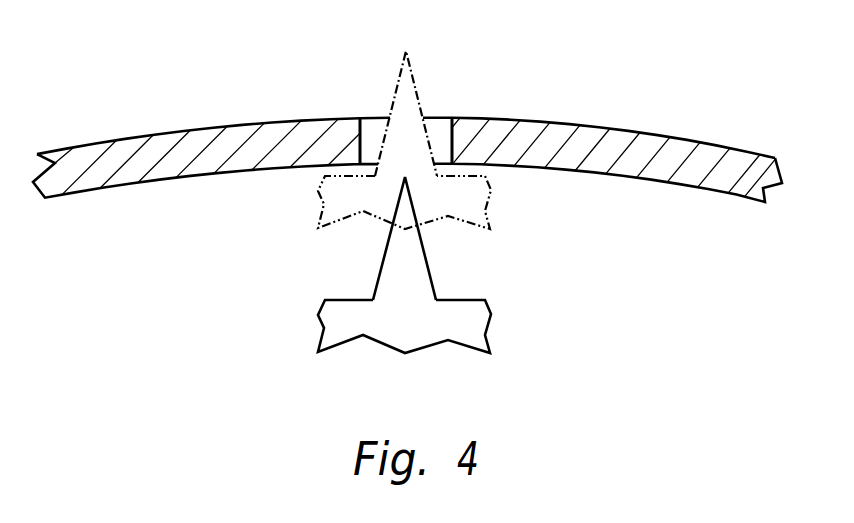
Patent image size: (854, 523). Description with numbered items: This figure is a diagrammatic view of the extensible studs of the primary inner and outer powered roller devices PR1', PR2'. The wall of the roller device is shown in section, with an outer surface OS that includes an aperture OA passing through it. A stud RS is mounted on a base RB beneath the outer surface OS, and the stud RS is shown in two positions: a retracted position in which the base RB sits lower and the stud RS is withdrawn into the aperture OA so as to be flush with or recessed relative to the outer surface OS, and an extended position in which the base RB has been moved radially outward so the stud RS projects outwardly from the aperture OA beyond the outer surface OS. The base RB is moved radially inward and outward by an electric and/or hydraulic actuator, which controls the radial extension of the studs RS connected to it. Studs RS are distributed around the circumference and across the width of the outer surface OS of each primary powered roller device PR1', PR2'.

The primary inner powered roller device PR1' is at (404, 111).
The primary outer powered roller device PR2' is at (608, 113).
The outer surface OS is at (212, 126).
The aperture OA is at (452, 142).
The stud RS is at (414, 105).
The base RB is at (350, 194).